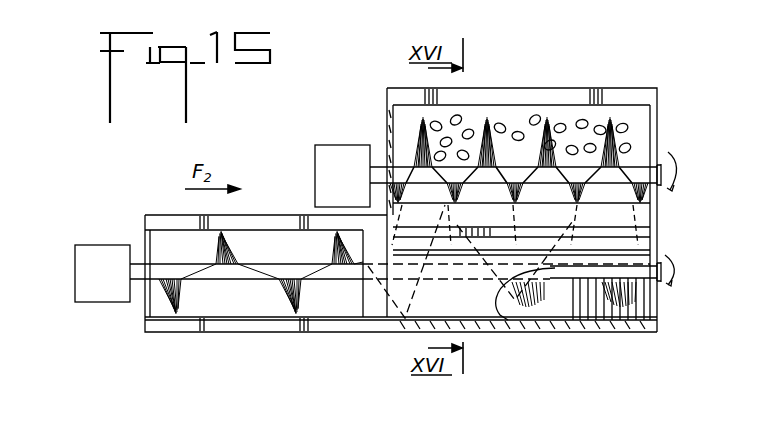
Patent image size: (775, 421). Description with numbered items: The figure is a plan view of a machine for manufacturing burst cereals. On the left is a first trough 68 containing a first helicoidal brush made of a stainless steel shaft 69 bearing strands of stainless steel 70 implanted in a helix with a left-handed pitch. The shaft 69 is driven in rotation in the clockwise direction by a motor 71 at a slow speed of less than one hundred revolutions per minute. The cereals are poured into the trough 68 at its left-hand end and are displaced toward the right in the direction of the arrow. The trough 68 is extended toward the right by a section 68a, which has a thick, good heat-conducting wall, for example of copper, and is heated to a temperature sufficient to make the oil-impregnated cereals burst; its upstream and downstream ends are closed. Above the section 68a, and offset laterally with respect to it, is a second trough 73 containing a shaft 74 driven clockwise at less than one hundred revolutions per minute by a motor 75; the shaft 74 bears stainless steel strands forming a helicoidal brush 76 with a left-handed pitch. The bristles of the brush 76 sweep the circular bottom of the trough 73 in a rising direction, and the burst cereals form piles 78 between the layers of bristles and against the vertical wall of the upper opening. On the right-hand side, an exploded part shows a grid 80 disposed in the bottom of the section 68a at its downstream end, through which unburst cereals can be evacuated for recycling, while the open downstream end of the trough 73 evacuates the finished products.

The first trough 68 is at (232, 322).
The section of trough 68a is at (386, 322).
The stainless steel shaft 69 is at (282, 272).
The strands of stainless steel 70 is at (225, 252).
The motor 71 is at (92, 250).
The second trough 73 is at (633, 100).
The shaft 74 is at (628, 168).
The motor 75 is at (331, 145).
The helicoidal brush 76 is at (552, 137).
The piles 78 is at (500, 125).
The grid 80 is at (602, 312).